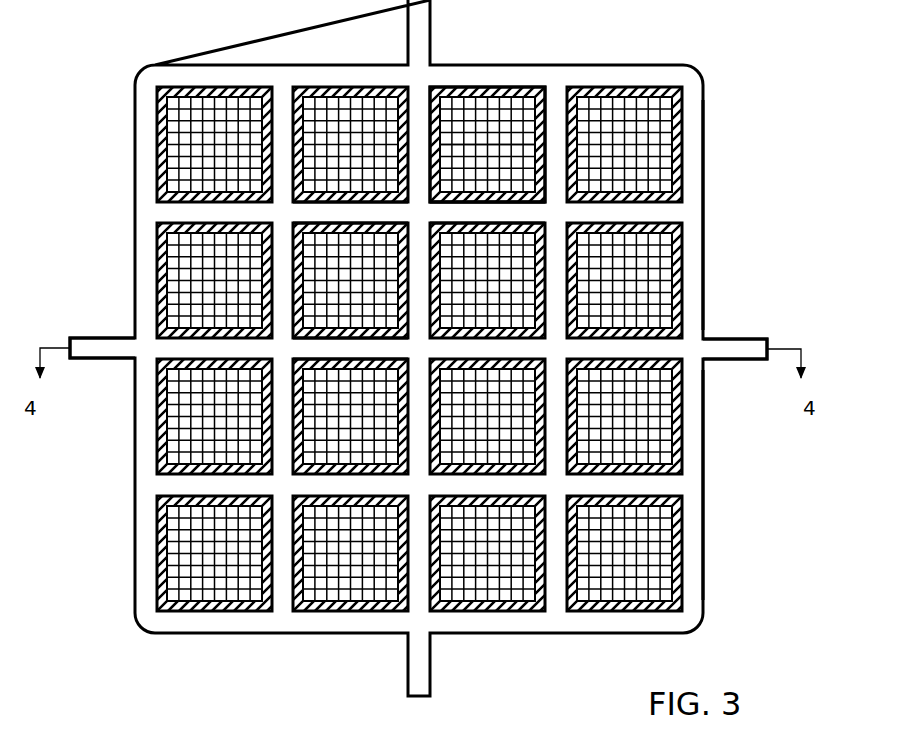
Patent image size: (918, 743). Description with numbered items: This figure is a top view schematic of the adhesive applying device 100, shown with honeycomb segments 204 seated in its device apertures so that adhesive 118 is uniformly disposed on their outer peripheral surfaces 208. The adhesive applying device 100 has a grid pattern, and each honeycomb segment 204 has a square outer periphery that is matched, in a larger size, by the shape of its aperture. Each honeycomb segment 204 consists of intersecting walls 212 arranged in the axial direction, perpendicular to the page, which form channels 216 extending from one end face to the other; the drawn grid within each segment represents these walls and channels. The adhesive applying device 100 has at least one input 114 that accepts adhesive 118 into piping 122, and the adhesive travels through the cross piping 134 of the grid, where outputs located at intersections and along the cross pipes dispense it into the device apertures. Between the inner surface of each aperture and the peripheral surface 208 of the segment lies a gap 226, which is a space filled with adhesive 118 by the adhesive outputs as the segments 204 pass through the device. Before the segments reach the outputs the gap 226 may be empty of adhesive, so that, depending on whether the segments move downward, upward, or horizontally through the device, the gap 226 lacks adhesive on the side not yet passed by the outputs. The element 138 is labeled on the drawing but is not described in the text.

The adhesive applying device 100 is at (695, 150).
The input 114 is at (730, 337).
The adhesive 118 is at (293, 100).
The piping 122 is at (688, 215).
The cross piping 134 is at (419, 213).
The housing wall 138 is at (693, 437).
The honeycomb segment 204 is at (467, 115).
The peripheral surface 208 is at (424, 123).
The intersecting walls 212 is at (503, 117).
The channels 216 is at (498, 142).
The gap 226 is at (345, 380).